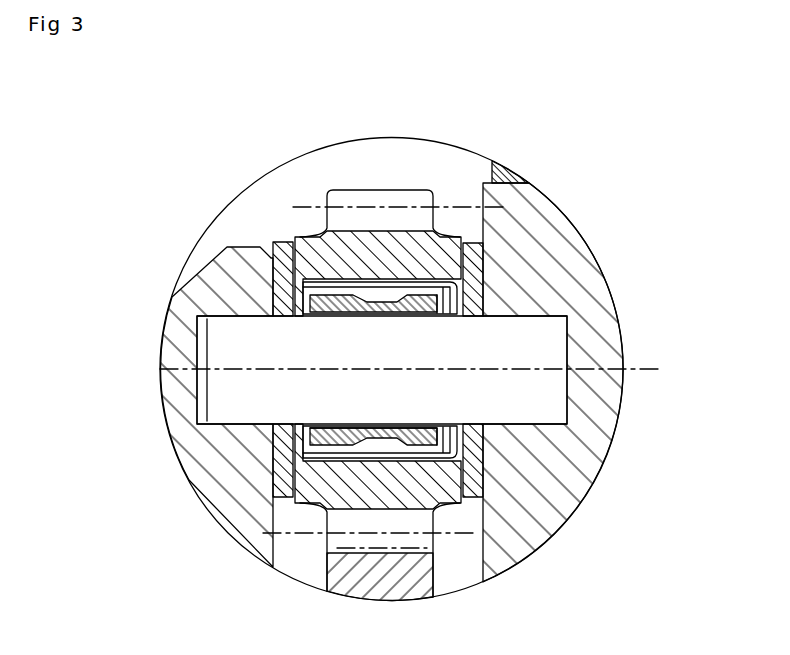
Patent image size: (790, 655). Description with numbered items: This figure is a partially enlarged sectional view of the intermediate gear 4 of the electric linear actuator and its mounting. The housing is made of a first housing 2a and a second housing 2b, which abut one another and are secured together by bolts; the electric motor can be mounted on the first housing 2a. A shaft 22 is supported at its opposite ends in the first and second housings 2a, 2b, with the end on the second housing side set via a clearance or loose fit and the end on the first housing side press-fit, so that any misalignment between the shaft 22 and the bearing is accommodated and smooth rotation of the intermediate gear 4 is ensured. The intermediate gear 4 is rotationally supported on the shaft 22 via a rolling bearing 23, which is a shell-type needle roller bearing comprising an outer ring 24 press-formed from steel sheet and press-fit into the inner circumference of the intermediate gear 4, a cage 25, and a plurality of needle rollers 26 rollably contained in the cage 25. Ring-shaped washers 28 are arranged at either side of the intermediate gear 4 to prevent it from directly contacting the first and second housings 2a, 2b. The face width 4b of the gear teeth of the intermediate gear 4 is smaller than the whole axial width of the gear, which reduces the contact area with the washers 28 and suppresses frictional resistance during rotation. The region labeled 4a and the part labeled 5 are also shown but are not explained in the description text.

The first housing 2a is at (207, 290).
The second housing 2b is at (573, 273).
The intermediate gear 4 is at (383, 340).
The large-diameter portion of rotating member 4a is at (313, 300).
The face width of the gear teeth 4b is at (372, 202).
The bearing support member 5 is at (413, 587).
The shaft 22 is at (233, 379).
The rolling bearing 23 is at (522, 393).
The outer ring 24 is at (420, 458).
The cage 25 is at (437, 440).
The needle rollers 26 is at (420, 425).
The washers 28 is at (278, 488).